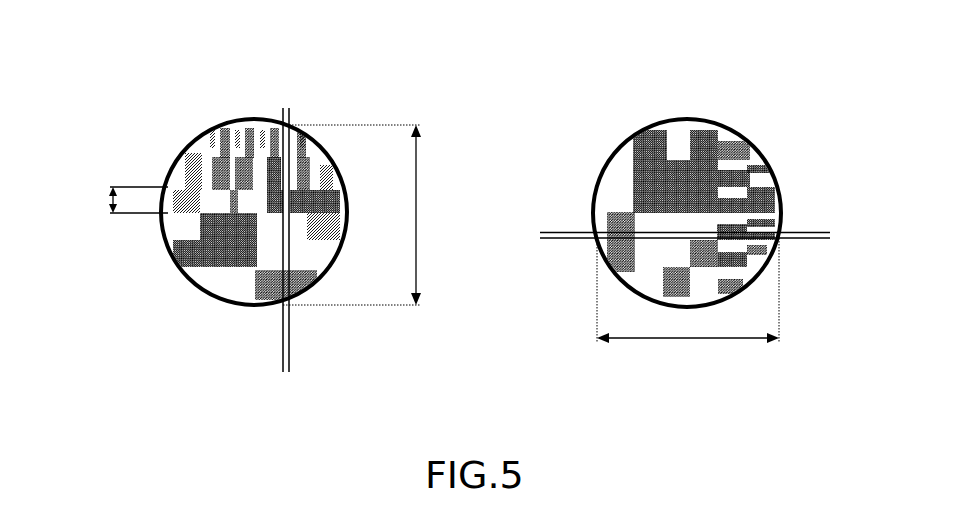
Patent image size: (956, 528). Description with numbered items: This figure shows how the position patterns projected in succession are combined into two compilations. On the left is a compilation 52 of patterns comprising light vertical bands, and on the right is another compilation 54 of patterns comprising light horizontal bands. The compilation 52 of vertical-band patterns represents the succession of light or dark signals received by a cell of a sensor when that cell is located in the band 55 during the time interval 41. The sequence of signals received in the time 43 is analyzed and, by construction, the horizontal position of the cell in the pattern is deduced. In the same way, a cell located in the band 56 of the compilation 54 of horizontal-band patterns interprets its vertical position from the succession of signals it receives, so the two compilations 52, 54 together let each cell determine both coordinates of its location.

The time interval 41 is at (108, 200).
The time 43 is at (623, 345).
The compilation of patterns comprising light vertical bands 52 is at (220, 299).
The compilation of patterns comprising light horizontal bands 54 is at (689, 118).
The band 55 is at (287, 108).
The band 56 is at (834, 238).